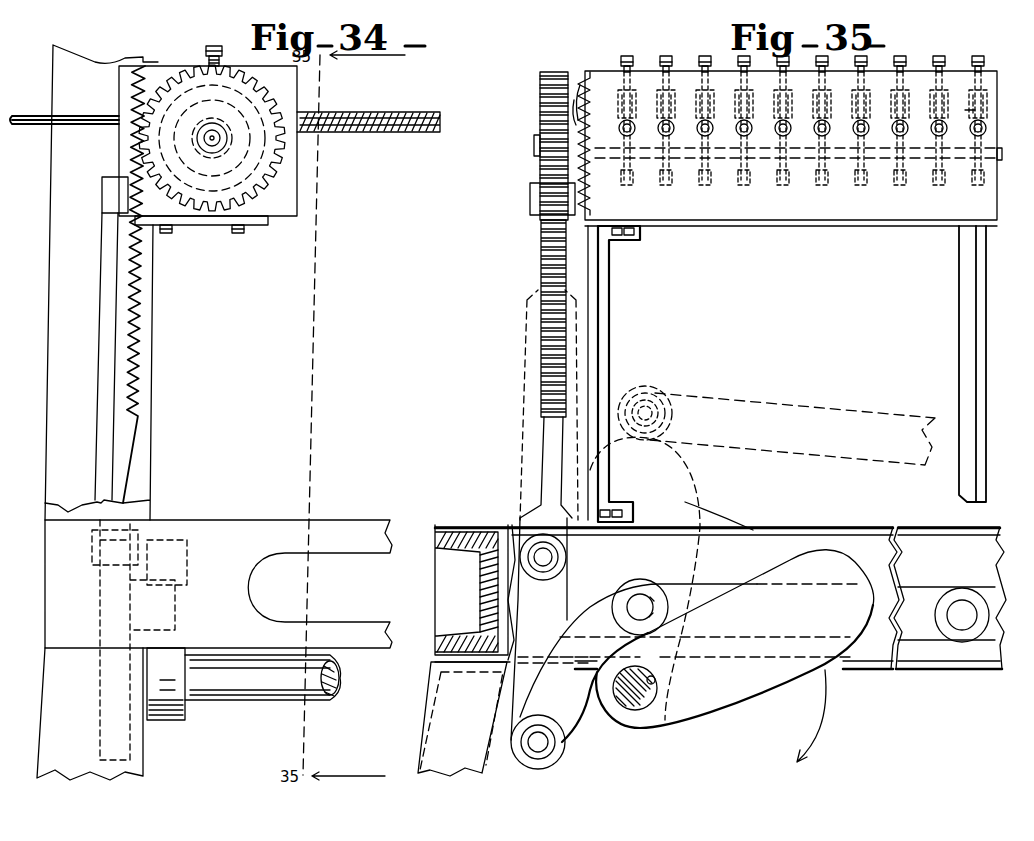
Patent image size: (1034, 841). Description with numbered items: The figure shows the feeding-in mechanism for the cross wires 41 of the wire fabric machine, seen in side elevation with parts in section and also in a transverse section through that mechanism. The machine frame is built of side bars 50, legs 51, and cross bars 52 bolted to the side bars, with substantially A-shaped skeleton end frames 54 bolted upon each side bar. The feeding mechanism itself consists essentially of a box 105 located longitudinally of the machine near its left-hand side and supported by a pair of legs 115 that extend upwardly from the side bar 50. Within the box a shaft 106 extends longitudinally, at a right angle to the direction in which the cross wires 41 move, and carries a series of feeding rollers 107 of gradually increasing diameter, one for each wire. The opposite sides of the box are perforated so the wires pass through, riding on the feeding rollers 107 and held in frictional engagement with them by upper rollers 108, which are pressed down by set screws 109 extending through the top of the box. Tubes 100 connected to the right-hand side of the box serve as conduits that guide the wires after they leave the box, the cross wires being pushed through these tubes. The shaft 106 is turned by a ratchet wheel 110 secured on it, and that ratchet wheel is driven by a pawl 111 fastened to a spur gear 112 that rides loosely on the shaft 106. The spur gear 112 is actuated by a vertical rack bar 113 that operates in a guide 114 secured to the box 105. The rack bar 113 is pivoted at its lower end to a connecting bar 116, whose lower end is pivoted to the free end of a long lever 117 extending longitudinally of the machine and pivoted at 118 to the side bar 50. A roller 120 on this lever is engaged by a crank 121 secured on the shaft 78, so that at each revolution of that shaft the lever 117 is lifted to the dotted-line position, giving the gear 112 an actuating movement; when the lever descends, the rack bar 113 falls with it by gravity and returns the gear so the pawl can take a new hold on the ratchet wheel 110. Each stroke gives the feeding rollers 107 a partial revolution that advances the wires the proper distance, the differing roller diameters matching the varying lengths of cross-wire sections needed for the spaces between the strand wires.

In FIG. 34, the cross wires 41 is at (96, 120).
In FIG. 35, the side bars 50 is at (838, 530).
In FIG. 34, the legs 51 is at (46, 718).
In FIG. 35, the legs 51 is at (440, 716).
In FIG. 34, the cross bars 52 is at (240, 530).
In FIG. 35, the cross bars 52 is at (480, 573).
In FIG. 34, the end frames 54 is at (50, 298).
In FIG. 34, the shaft 78 is at (238, 702).
In FIG. 35, the shaft 78 is at (634, 712).
In FIG. 34, the tubes 100 is at (385, 133).
In FIG. 35, the tubes 100 is at (975, 131).
In FIG. 34, the box 105 is at (285, 200).
In FIG. 35, the box 105 is at (763, 148).
In FIG. 35, the shaft 106 is at (534, 146).
In FIG. 35, the feeding rollers 107 is at (930, 180).
In FIG. 35, the upper rollers 108 is at (975, 110).
In FIG. 34, the set screws 109 is at (218, 40).
In FIG. 35, the set screws 109 is at (900, 62).
In FIG. 35, the ratchet wheel 110 is at (590, 180).
In FIG. 35, the pawl 111 is at (580, 85).
In FIG. 34, the spur gear 112 is at (275, 168).
In FIG. 35, the spur gear 112 is at (539, 80).
In FIG. 34, the rack bar 113 is at (135, 330).
In FIG. 35, the rack bar 113 is at (548, 266).
In FIG. 34, the guide 114 is at (110, 196).
In FIG. 34, the legs 115 is at (106, 365).
In FIG. 35, the legs 115 is at (605, 308).
In FIG. 35, the connecting bar 116 is at (632, 643).
In FIG. 35, the long lever 117 is at (822, 412).
In FIG. 35, the pivot 118 is at (960, 625).
In FIG. 35, the roller 120 is at (650, 392).
In FIG. 34, the crank 121 is at (172, 712).
In FIG. 35, the crank 121 is at (718, 646).